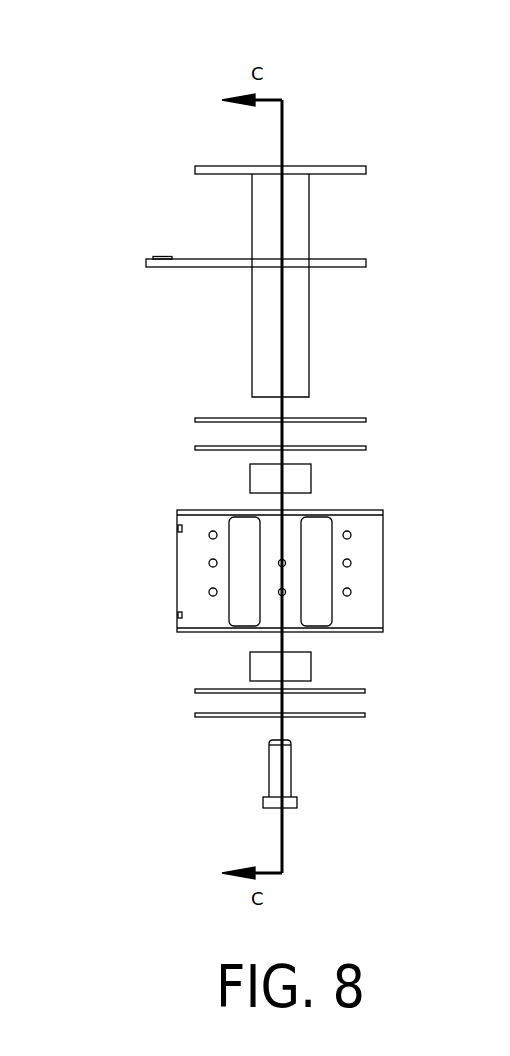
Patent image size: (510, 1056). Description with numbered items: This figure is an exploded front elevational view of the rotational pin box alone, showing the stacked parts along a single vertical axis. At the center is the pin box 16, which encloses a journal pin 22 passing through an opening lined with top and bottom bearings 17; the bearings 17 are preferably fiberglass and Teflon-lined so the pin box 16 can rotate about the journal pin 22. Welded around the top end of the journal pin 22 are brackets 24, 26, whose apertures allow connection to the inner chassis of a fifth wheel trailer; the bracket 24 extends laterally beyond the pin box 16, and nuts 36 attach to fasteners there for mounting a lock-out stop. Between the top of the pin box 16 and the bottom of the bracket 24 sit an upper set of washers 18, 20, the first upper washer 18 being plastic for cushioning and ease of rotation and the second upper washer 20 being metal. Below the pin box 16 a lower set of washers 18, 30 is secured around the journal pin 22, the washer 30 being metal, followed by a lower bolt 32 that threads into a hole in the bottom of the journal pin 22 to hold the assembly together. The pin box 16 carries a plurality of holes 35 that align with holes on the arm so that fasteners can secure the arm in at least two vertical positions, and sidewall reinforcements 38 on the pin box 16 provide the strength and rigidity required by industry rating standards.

The pin box 16 is at (314, 571).
The bearings 17 is at (315, 572).
The washer 18 is at (326, 569).
The second upper washer 20 is at (322, 390).
The journal pin 22 is at (315, 285).
The bracket 24 is at (272, 237).
The bracket 26 is at (297, 142).
The washer 30 is at (326, 734).
The lower bolt 32 is at (342, 785).
The holes 35 is at (209, 536).
The nuts 36 is at (123, 235).
The sidewall reinforcements 38 is at (317, 590).